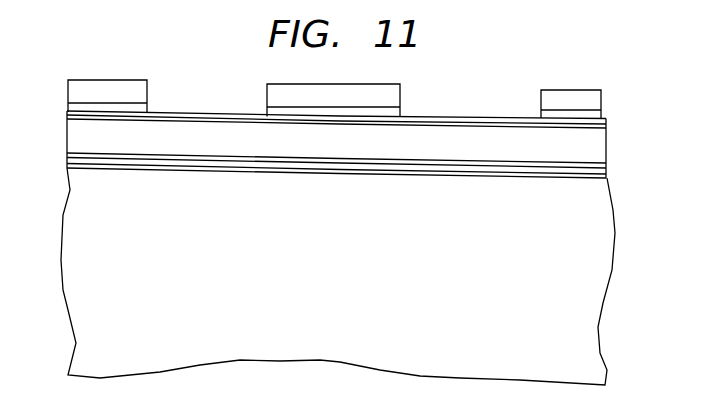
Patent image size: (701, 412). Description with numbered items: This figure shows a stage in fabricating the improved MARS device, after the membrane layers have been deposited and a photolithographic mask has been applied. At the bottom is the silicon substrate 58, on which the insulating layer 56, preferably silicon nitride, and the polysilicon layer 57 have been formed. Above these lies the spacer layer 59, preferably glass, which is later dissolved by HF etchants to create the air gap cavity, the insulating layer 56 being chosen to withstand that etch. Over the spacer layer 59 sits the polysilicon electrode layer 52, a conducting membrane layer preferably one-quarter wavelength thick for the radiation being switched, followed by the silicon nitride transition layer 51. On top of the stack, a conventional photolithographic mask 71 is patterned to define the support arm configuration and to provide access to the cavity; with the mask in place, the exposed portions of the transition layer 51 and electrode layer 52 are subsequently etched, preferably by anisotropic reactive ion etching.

The photolithographic mask 71 is at (105, 88).
The polysilicon electrode layer 52 is at (72, 112).
The spacer layer 59 is at (77, 131).
The insulating layer 56 is at (72, 163).
The polysilicon layer 57 is at (606, 165).
The SiNx transition layer 51 is at (604, 116).
The silicon substrate 58 is at (603, 233).